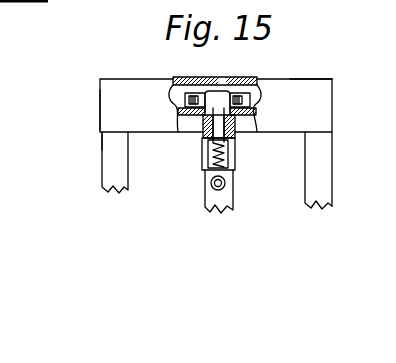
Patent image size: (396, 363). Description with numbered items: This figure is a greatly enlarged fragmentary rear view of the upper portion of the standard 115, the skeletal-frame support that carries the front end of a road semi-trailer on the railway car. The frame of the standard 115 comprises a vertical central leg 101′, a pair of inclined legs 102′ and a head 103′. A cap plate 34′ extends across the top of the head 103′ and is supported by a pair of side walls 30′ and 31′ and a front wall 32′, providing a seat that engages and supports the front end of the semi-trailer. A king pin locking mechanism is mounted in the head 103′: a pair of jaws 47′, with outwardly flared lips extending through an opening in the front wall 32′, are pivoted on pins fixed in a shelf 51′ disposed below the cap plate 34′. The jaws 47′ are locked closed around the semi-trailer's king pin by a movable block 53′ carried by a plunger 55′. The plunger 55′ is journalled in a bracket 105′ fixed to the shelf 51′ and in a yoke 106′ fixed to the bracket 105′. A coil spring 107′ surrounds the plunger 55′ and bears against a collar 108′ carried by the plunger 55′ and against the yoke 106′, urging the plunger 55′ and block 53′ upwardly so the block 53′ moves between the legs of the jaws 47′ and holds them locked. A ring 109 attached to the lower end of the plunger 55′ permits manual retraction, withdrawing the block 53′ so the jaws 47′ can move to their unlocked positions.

The side wall 30′ is at (100, 87).
The side wall 31′ is at (332, 88).
The front wall 32′ is at (313, 79).
The head 103′ is at (99, 109).
The standard 115 is at (93, 152).
The inclined legs 102′ is at (103, 187).
The cap plate 34′ is at (190, 78).
The plunger 55′ is at (174, 119).
The jaws 47′ is at (267, 90).
The movable block 53′ is at (221, 91).
The shelf 51′ is at (257, 108).
The bracket 105′ is at (236, 127).
The yoke 106′ is at (236, 165).
The collar 108′ is at (204, 143).
The coil spring 107′ is at (208, 153).
The vertical central leg 101′ is at (217, 210).
The ring 109 is at (210, 185).